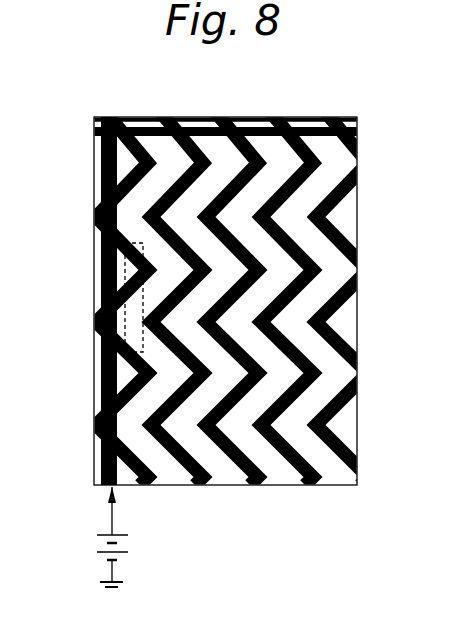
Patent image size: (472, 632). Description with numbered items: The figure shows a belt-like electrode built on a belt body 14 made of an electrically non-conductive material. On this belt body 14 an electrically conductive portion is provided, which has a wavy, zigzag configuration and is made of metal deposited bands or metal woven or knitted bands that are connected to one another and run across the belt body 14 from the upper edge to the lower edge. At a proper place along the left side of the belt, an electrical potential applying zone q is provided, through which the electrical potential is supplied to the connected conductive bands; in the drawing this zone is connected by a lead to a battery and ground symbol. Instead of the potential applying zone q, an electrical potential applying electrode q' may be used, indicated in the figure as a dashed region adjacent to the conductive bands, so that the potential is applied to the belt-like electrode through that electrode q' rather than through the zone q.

The belt body 14 is at (222, 486).
The electrical potential applying zone q is at (98, 297).
The electrical potential applying electrode q' is at (97, 322).